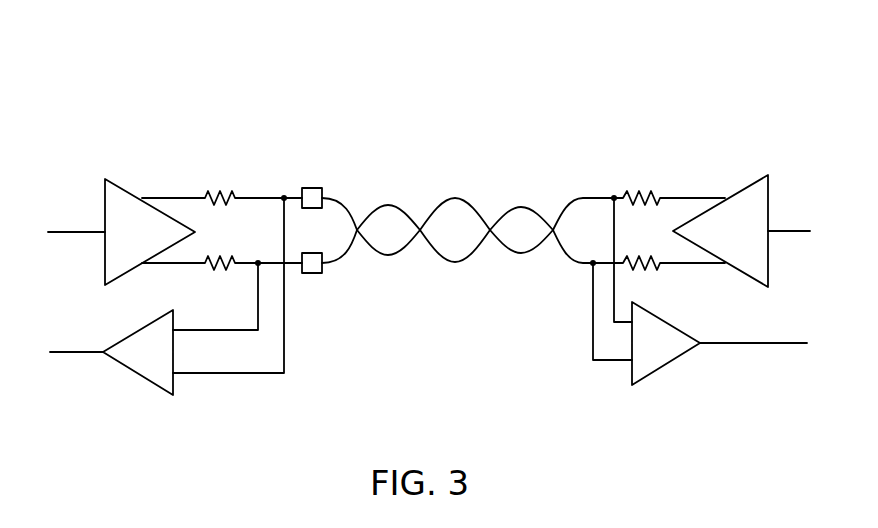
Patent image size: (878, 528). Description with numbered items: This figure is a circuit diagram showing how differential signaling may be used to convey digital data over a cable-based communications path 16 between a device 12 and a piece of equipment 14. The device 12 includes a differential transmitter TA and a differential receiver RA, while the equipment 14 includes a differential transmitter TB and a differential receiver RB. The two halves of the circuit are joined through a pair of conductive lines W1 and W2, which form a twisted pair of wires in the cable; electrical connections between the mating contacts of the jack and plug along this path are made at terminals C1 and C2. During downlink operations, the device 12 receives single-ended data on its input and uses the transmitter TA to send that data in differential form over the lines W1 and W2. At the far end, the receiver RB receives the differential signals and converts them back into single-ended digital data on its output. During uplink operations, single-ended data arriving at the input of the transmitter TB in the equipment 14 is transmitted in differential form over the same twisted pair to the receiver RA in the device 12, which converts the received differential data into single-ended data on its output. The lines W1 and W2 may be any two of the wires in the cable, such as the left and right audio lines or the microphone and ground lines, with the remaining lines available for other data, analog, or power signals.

The device 12 is at (192, 157).
The equipment 14 is at (778, 157).
The differential communication link 16 is at (447, 95).
The terminal C1 is at (311, 188).
The terminal C2 is at (312, 273).
The conductive line W1 is at (391, 205).
The conductive line W2 is at (389, 256).
The differential transmitter TA is at (150, 232).
The differential receiver RA is at (138, 352).
The differential transmitter TB is at (720, 231).
The differential receiver RB is at (666, 343).